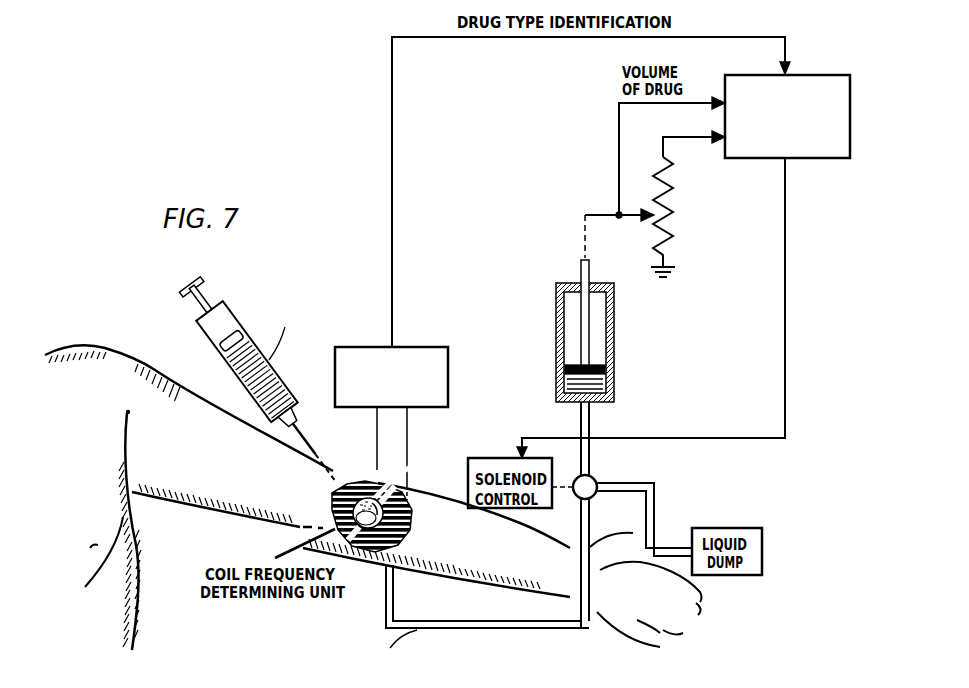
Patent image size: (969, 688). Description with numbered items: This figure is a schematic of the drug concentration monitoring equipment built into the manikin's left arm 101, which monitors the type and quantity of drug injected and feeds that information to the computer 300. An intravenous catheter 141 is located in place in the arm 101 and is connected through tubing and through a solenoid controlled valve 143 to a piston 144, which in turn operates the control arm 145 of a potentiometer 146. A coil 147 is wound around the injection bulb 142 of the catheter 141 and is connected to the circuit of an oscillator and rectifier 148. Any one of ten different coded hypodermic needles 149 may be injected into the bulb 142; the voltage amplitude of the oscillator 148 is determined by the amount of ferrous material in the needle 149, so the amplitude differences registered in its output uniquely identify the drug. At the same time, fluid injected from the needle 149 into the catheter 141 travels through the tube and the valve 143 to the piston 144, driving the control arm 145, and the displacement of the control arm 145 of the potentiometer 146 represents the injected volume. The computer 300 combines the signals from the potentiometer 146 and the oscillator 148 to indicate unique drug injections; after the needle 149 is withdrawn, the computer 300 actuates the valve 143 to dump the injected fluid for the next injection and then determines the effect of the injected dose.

The left arm 101 is at (182, 379).
The intravenous catheter 141 is at (385, 612).
The injection bulb 142 is at (375, 498).
The solenoid controlled valve 143 is at (596, 478).
The piston 144 is at (614, 364).
The control arm 145 is at (630, 218).
The potentiometer 146 is at (678, 196).
The coil 147 is at (392, 520).
The oscillator and rectifier 148 is at (413, 347).
The hypodermic needle 149 is at (318, 462).
The computer 300 is at (827, 166).